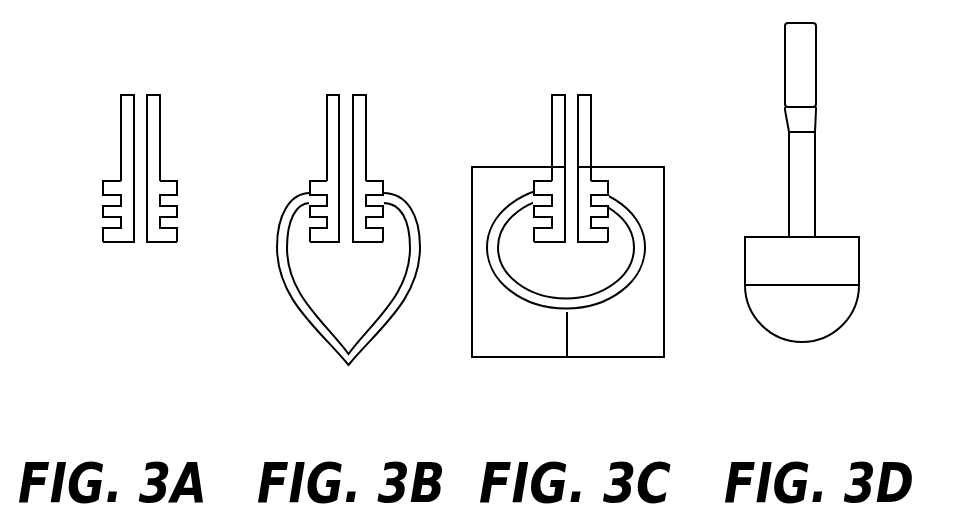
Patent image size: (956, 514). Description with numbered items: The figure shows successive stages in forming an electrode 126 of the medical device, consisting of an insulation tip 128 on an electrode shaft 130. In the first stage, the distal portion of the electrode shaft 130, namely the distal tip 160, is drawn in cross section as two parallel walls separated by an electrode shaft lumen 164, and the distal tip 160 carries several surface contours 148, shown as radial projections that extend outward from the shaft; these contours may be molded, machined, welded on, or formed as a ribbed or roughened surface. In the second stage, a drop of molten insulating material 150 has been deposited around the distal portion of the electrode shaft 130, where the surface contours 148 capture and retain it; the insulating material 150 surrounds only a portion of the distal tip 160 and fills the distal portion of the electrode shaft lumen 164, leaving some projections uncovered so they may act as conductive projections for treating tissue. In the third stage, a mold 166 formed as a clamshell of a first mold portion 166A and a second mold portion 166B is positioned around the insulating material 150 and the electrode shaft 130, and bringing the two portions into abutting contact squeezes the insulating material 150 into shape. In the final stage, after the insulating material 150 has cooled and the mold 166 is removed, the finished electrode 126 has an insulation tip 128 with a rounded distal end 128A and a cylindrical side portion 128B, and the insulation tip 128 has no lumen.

In FIG. 3D, the electrode 126 is at (831, 88).
In FIG. 3D, the insulation tip 128 is at (802, 299).
In FIG. 3D, the rounded distal end 128A is at (780, 340).
In FIG. 3D, the cylindrical side portion 128B is at (859, 263).
In FIG. 3A, the electrode shaft 130 is at (160, 134).
In FIG. 3B, the electrode shaft 130 is at (366, 112).
In FIG. 3C, the electrode shaft 130 is at (591, 142).
In FIG. 3D, the electrode shaft 130 is at (815, 187).
In FIG. 3A, the surface contours 148 is at (177, 187).
In FIG. 3B, the surface contours 148 is at (383, 187).
In FIG. 3C, the surface contours 148 is at (608, 188).
In FIG. 3B, the insulating material 150 is at (383, 340).
In FIG. 3C, the insulating material 150 is at (645, 232).
In FIG. 3A, the distal tip 160 is at (90, 197).
In FIG. 3A, the electrode shaft lumen 164 is at (134, 127).
In FIG. 3B, the electrode shaft lumen 164 is at (339, 128).
In FIG. 3C, the electrode shaft lumen 164 is at (578, 120).
In FIG. 3C, the mold 166 is at (568, 310).
In FIG. 3C, the first mold portion 166A is at (557, 350).
In FIG. 3C, the second mold portion 166B is at (609, 348).